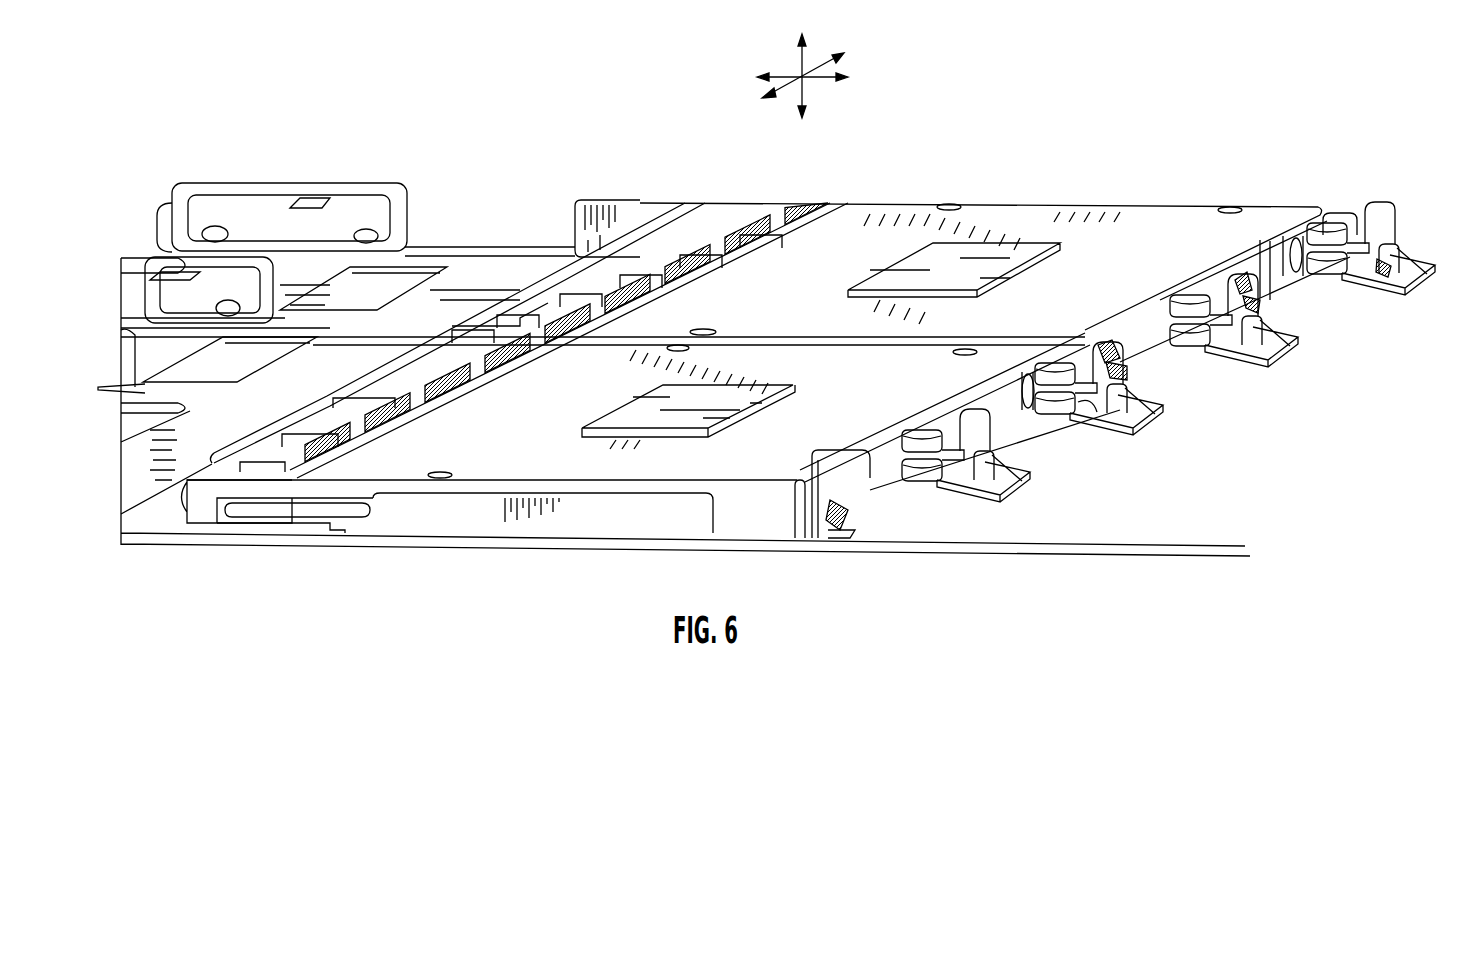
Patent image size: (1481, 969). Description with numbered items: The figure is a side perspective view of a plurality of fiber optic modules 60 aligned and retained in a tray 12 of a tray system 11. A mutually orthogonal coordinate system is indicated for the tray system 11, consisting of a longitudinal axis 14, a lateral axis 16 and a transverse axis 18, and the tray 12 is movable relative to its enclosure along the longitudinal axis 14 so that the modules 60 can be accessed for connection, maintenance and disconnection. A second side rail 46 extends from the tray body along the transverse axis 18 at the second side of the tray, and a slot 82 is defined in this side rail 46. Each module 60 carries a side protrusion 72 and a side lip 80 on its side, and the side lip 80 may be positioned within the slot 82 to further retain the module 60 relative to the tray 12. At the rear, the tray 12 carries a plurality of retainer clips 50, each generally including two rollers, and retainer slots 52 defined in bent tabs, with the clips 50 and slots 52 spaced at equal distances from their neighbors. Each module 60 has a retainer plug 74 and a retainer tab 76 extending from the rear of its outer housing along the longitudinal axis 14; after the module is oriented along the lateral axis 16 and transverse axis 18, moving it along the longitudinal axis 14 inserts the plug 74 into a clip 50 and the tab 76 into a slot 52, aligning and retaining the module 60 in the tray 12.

The tray system 11 is at (978, 128).
The tray 12 is at (497, 268).
The longitudinal axis 14 is at (823, 83).
The lateral axis 16 is at (787, 92).
The transverse axis 18 is at (800, 52).
The second side rail 46 is at (519, 525).
The retainer clip 50 is at (1385, 273).
The retainer slot 52 is at (1244, 295).
The fiber optic module 60 is at (1125, 217).
The side protrusion 72 is at (300, 513).
The retainer plug 74 is at (1086, 404).
The retainer tab 76 is at (1258, 310).
The side lip 80 is at (233, 530).
The slot 82 is at (336, 525).